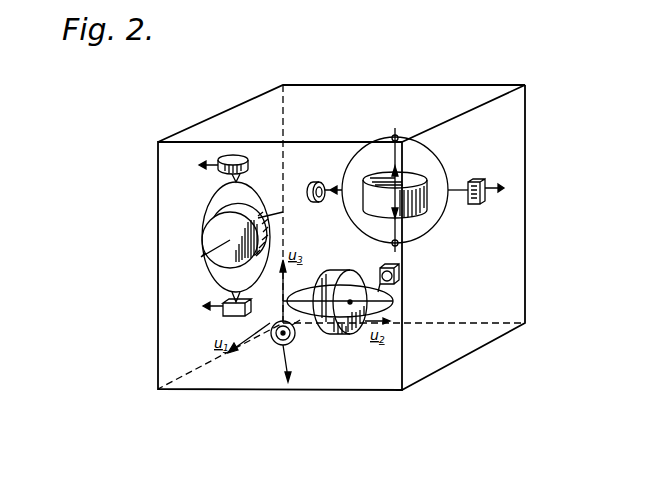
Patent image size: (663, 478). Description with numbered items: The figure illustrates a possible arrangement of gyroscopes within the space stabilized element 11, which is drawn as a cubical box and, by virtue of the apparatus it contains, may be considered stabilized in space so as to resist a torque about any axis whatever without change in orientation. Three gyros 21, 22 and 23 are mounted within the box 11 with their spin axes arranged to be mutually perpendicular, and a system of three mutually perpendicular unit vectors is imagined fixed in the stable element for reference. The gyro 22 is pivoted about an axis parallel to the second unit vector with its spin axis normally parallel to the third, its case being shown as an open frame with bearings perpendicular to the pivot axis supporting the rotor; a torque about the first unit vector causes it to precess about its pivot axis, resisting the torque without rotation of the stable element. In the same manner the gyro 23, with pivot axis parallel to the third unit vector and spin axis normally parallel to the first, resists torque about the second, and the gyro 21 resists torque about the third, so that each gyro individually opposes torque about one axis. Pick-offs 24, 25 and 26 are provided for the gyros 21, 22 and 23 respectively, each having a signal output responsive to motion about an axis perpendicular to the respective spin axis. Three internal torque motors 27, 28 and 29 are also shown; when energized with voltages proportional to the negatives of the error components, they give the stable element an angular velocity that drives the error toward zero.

The space stabilized element 11 is at (513, 262).
The gyro 21 is at (336, 333).
The gyro 22 is at (430, 212).
The gyro 23 is at (212, 218).
The pick-off 24 is at (279, 341).
The pick-off 25 is at (318, 182).
The pick-off 26 is at (236, 157).
The internal torque motor 27 is at (400, 278).
The internal torque motor 28 is at (474, 180).
The internal torque motor 29 is at (222, 315).